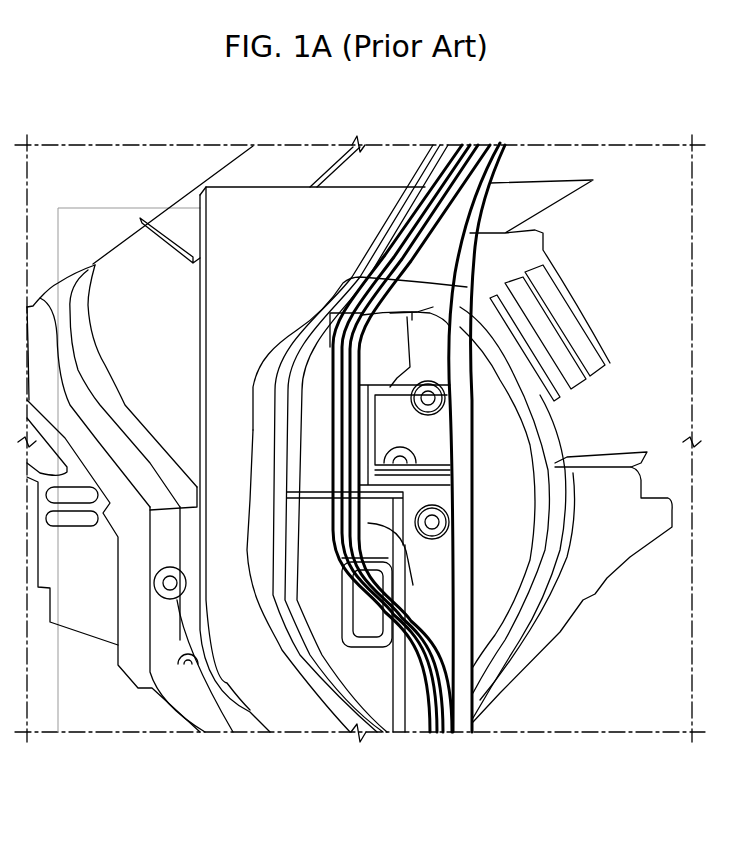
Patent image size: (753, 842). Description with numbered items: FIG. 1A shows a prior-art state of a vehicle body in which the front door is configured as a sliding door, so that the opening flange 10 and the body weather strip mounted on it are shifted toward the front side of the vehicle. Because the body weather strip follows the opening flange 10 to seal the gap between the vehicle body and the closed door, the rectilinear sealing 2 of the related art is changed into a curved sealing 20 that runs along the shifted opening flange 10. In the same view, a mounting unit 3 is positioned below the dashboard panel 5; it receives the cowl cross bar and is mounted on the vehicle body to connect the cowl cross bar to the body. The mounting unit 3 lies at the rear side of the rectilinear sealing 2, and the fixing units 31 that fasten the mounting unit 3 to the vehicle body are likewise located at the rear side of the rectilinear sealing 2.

The opening flange 10 is at (262, 202).
The curved sealing 20 is at (423, 195).
The rectilinear sealing 2 is at (485, 172).
The mounting unit 3 is at (420, 345).
The fixing units 31 is at (445, 520).
The dashboard panel 5 is at (570, 597).